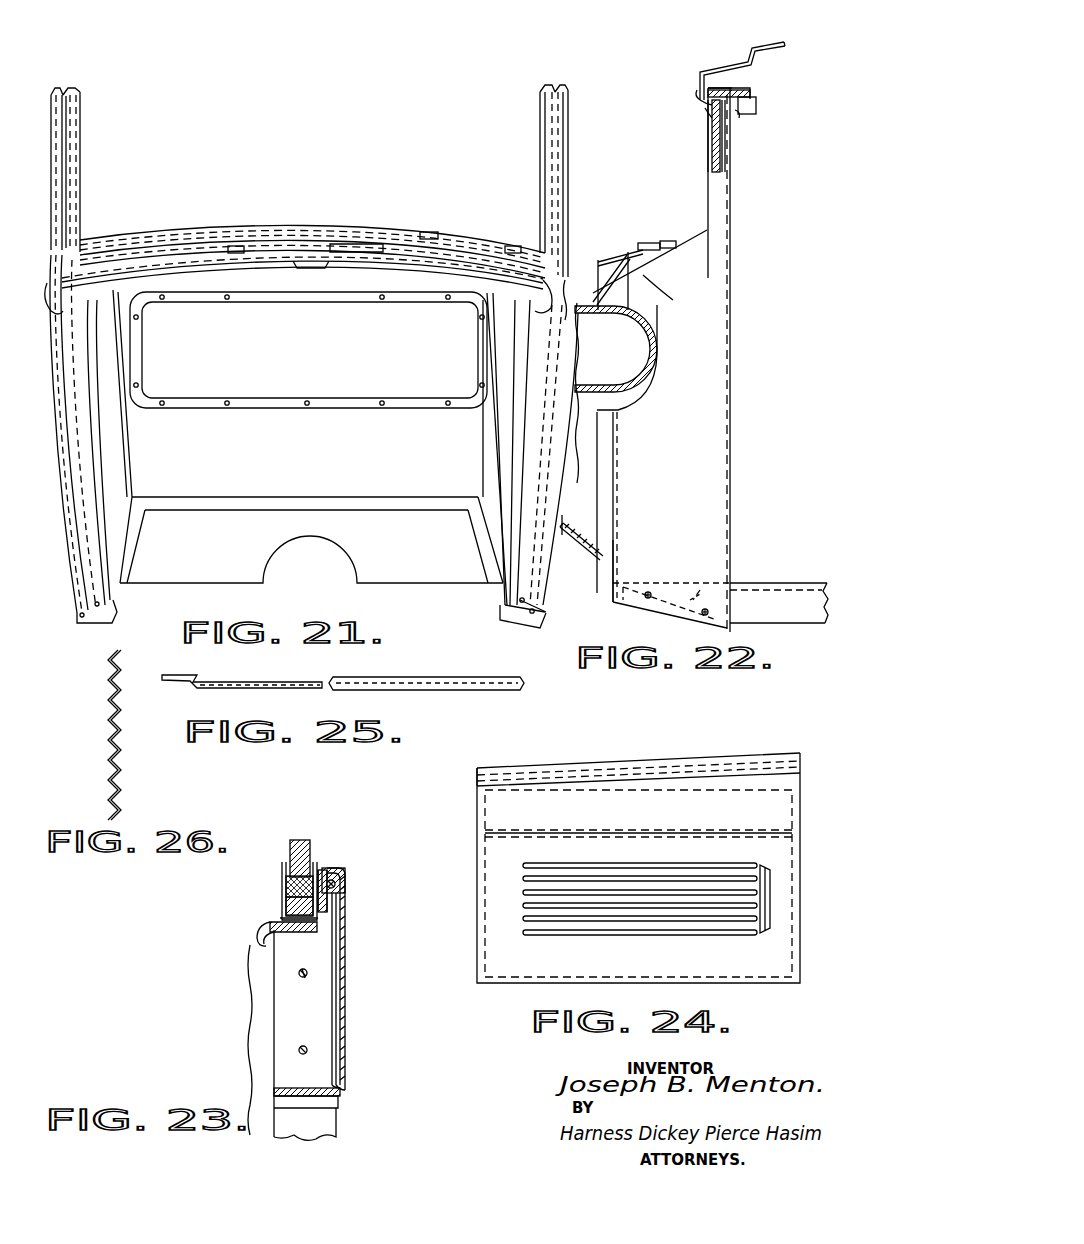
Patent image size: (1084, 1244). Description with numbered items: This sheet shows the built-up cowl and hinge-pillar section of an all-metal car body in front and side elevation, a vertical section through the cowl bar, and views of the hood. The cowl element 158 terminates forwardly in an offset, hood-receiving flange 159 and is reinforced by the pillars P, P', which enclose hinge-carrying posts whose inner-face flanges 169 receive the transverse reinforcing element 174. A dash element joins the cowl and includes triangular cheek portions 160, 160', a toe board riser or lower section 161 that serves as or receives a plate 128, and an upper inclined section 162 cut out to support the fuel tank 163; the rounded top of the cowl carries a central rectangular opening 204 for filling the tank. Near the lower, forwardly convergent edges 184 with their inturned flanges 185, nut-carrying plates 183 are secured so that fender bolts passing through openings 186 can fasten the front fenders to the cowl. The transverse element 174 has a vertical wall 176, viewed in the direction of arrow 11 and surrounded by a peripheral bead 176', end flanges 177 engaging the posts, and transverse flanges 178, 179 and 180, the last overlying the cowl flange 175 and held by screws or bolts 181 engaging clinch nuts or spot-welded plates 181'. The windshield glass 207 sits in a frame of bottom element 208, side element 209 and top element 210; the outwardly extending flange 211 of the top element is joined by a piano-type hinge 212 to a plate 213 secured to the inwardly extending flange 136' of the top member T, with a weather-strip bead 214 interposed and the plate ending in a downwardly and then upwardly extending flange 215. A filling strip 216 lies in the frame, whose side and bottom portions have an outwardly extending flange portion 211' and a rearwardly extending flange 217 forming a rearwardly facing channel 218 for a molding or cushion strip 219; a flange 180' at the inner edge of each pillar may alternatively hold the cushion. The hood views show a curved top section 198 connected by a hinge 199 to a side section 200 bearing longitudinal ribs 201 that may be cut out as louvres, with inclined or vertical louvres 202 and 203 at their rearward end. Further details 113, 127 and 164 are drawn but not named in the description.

In FIG. 22, the arrow 11 is at (737, 255).
In FIG. 22, the sill 113 is at (763, 583).
In FIG. 22, the bottom bracket 127 is at (613, 587).
In FIG. 21, the plate 128 is at (132, 572).
In FIG. 22, the plate 128 is at (577, 538).
In FIG. 22, the inwardly extending flange 136' is at (746, 77).
In FIG. 21, the cowl element 158 is at (540, 460).
In FIG. 22, the cowl element 158 is at (707, 483).
In FIG. 23, the cowl element 158 is at (258, 938).
In FIG. 21, the offset flange 159 is at (513, 527).
In FIG. 22, the offset flange 159 is at (610, 472).
In FIG. 21, the cheek portion 160 is at (473, 398).
In FIG. 22, the cheek portion 160 is at (625, 502).
In FIG. 21, the cheek portion 160' is at (120, 434).
In FIG. 21, the toe board riser 161 is at (130, 537).
In FIG. 21, the upper inclined section 162 is at (268, 487).
In FIG. 22, the upper inclined section 162 is at (615, 278).
In FIG. 21, the fuel tank 163 is at (302, 385).
In FIG. 22, the fuel tank 163 is at (620, 347).
In FIG. 22, the outer panel 164 is at (730, 417).
In FIG. 23, the flange 169 is at (333, 1125).
In FIG. 23, the transverse reinforcing element 174 is at (350, 940).
In FIG. 21, the flange 175 is at (372, 226).
In FIG. 23, the flange 175 is at (330, 935).
In FIG. 23, the vertical wall 176 is at (349, 989).
In FIG. 23, the peripheral bead 176' is at (354, 1068).
In FIG. 23, the end flange 177 is at (290, 1002).
In FIG. 23, the transverse flange 178 is at (290, 1088).
In FIG. 23, the transverse flange 179 is at (333, 880).
In FIG. 21, the transverse flange 180 is at (312, 237).
In FIG. 23, the transverse flange 180 is at (351, 868).
In FIG. 21, the flange 180' is at (97, 172).
In FIG. 21, the screws or bolts 181 is at (479, 229).
In FIG. 23, the screws or bolts 181 is at (355, 878).
In FIG. 21, the spot-welded plates 181' is at (452, 211).
In FIG. 21, the nut-carrying plate 183 is at (540, 625).
In FIG. 22, the nut-carrying plate 183 is at (737, 557).
In FIG. 21, the lower convergent edge 184 is at (540, 617).
In FIG. 21, the inturning flange 185 is at (510, 623).
In FIG. 21, the opening 186 is at (517, 610).
In FIG. 22, the opening 186 is at (648, 592).
In FIG. 24, the curved top section 198 is at (486, 798).
In FIG. 24, the hinge 199 is at (605, 765).
In FIG. 24, the side section 200 is at (486, 920).
In FIG. 26, the rib 201 is at (112, 727).
In FIG. 25, the louvre 202 is at (470, 690).
In FIG. 25, the louvre 203 is at (446, 689).
In FIG. 24, the louvre 203 is at (766, 860).
In FIG. 21, the central rectangular opening 204 is at (237, 248).
In FIG. 22, the central rectangular opening 204 is at (683, 227).
In FIG. 22, the windshield glass 207 is at (712, 162).
In FIG. 23, the windshield glass 207 is at (300, 840).
In FIG. 23, the bottom element 208 is at (284, 868).
In FIG. 22, the side element 209 is at (727, 155).
In FIG. 22, the top element 210 is at (705, 113).
In FIG. 22, the outwardly extending flange 211 is at (711, 117).
In FIG. 23, the outwardly extending flange portion 211' is at (254, 914).
In FIG. 22, the hinge 212 is at (695, 88).
In FIG. 22, the plate 213 is at (752, 107).
In FIG. 22, the bead 214 is at (700, 85).
In FIG. 22, the downwardly and upwardly extending flange 215 is at (755, 92).
In FIG. 23, the filling strip 216 is at (286, 886).
In FIG. 23, the rearwardly extending flange 217 is at (282, 925).
In FIG. 23, the rearwardly facing channel 218 is at (268, 945).
In FIG. 23, the cushion strip 219 is at (286, 902).
In FIG. 21, the pillar P is at (566, 181).
In FIG. 22, the pillar P is at (732, 360).
In FIG. 21, the pillar P' is at (84, 170).
In FIG. 22, the pillar P' is at (740, 136).
In FIG. 22, the top member T is at (761, 40).